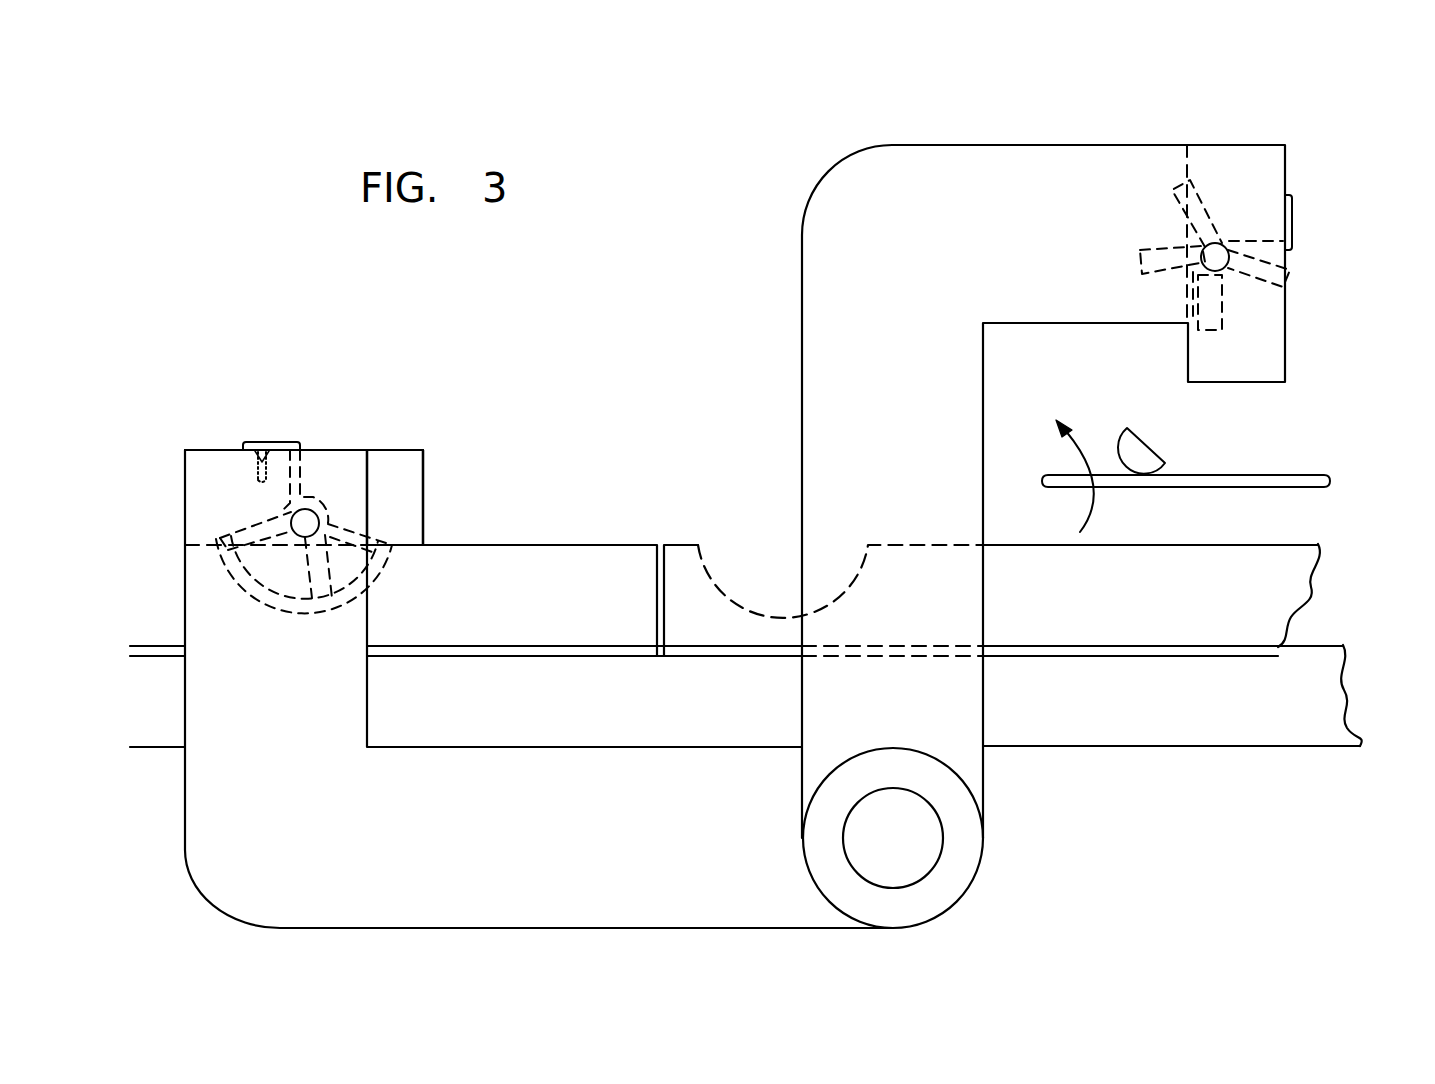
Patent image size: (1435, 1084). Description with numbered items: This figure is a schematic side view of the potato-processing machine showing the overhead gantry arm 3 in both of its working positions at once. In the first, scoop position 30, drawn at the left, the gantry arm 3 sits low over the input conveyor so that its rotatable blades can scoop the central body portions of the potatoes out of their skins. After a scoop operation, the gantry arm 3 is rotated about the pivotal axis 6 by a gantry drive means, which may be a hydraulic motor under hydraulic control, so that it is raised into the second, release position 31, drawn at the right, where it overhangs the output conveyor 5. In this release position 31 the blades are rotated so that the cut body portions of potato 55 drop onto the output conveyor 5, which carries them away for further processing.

The overhead gantry 3 is at (1250, 163).
The output conveyor 5 is at (1278, 480).
The pivotal axis 6 is at (918, 842).
The scoop position 30 is at (330, 443).
The release position 31 is at (1023, 141).
The cut body portions of potato 55 is at (1137, 452).